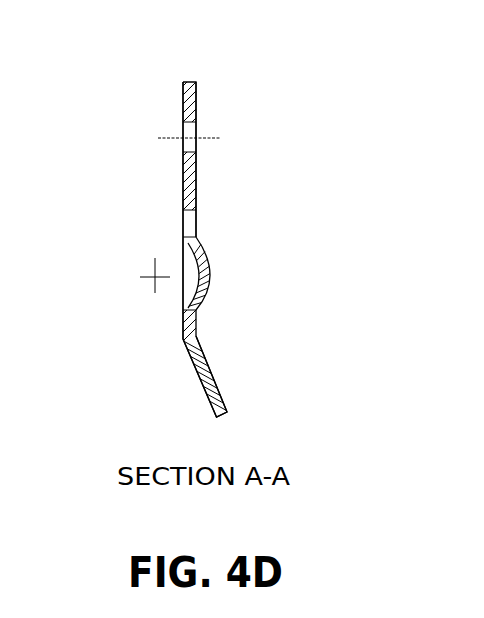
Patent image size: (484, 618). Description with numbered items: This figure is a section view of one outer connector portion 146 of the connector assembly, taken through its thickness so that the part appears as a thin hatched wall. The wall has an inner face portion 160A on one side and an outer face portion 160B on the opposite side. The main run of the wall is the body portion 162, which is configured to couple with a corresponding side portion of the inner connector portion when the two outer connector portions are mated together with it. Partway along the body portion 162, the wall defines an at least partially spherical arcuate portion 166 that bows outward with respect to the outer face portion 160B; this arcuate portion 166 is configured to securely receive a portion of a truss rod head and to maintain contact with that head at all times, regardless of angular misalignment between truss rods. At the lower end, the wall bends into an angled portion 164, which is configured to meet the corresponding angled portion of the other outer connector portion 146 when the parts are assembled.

The outer connector portion 146 is at (233, 83).
The body portion 162 is at (183, 152).
The inner face portion 160A is at (183, 203).
The outer face portion 160B is at (196, 185).
The at least partially spherical arcuate portion 166 is at (210, 277).
The angled portion 164 is at (211, 375).